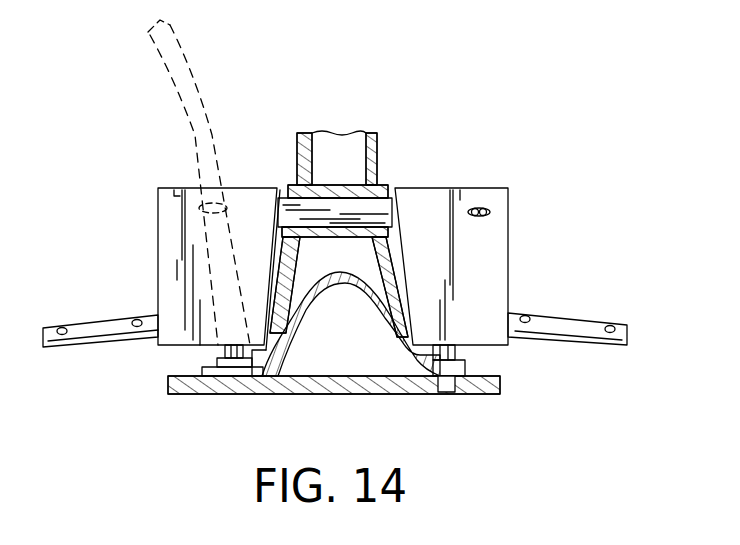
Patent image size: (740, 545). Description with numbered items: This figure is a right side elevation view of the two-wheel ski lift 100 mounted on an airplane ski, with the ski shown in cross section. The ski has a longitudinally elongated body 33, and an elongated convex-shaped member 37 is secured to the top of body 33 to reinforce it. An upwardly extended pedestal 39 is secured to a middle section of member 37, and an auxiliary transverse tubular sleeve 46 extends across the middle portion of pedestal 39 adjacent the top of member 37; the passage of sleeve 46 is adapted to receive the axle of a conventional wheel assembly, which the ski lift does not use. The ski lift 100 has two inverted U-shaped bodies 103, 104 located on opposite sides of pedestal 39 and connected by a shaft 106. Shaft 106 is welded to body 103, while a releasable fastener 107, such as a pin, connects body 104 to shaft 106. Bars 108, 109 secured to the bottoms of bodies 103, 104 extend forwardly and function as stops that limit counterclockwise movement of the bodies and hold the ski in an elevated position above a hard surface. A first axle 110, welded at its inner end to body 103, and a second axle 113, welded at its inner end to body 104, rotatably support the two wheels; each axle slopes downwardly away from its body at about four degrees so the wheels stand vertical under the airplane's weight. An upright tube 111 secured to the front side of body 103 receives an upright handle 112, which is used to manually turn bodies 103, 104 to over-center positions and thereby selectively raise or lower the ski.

The body 33 is at (312, 380).
The convex-shaped member 37 is at (369, 325).
The pedestal 39 is at (375, 147).
The transverse tubular sleeve 46 is at (375, 183).
The ski lift 100 is at (522, 170).
The inverted U-shaped body 103 is at (167, 213).
The inverted U-shaped body 104 is at (495, 250).
The shaft 106 is at (313, 212).
The releasable fastener 107 is at (490, 204).
The bar 108 is at (223, 358).
The bar 109 is at (465, 352).
The first axle 110 is at (73, 347).
The upright tube 111 is at (207, 270).
The upright handle 112 is at (177, 182).
The second axle 113 is at (590, 337).